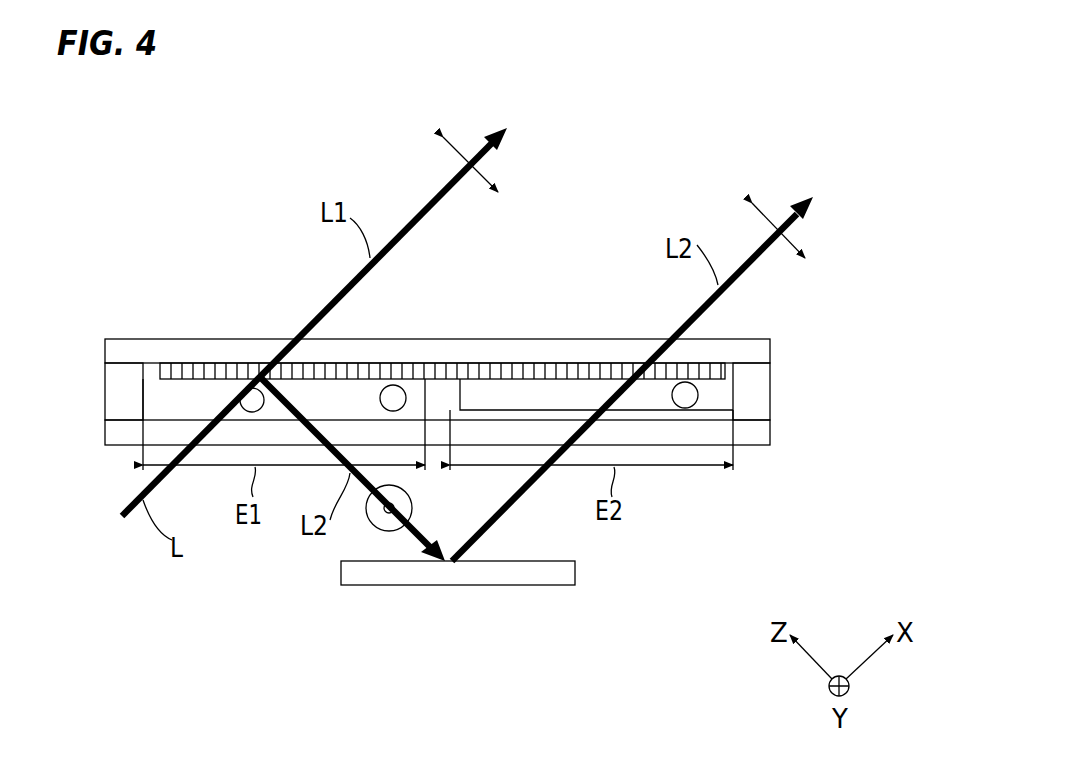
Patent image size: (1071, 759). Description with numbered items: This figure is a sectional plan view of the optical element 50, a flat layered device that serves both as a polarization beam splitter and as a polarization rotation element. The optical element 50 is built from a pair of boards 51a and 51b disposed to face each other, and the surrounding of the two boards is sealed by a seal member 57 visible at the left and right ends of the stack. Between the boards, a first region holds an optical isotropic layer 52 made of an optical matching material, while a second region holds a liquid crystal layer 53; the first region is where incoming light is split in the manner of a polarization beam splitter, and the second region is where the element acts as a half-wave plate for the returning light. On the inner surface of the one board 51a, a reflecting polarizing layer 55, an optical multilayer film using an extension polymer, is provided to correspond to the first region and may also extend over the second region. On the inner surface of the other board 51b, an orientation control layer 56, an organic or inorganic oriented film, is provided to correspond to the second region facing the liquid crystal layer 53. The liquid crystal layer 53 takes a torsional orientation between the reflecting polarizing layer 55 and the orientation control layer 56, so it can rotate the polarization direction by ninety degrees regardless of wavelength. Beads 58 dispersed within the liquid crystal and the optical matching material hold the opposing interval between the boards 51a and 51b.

The optical element 50 is at (147, 240).
The board 51a is at (768, 352).
The board 51b is at (768, 432).
The optical isotropic layer 52 is at (323, 390).
The liquid crystal layer 53 is at (572, 393).
The reflecting polarizing layer 55 is at (538, 370).
The orientation control layer 56 is at (640, 417).
The seal member 57 is at (115, 393).
The beads 58 is at (393, 385).